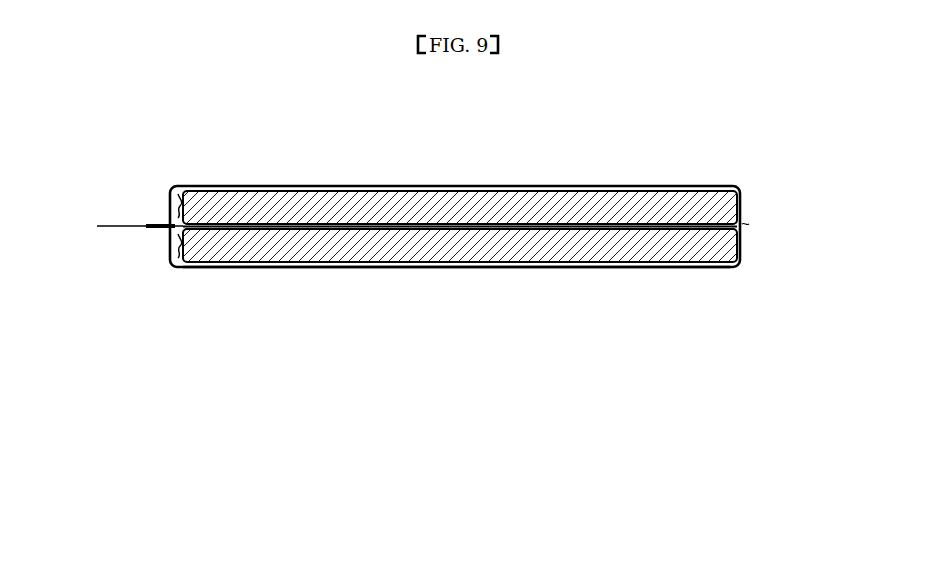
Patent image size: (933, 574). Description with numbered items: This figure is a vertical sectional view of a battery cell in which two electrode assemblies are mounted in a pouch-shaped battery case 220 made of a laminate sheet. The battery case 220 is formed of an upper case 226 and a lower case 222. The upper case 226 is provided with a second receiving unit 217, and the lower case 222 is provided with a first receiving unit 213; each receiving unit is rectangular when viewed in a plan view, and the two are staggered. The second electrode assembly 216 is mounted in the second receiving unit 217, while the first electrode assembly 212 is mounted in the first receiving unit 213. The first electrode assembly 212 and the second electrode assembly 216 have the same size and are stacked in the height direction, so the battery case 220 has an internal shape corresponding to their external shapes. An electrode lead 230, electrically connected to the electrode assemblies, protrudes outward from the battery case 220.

The first electrode assembly 212 is at (680, 243).
The first receiving unit 213 is at (177, 253).
The second electrode assembly 216 is at (688, 186).
The second receiving unit 217 is at (175, 191).
The battery case 220 is at (866, 197).
The lower case 222 is at (743, 246).
The upper case 226 is at (743, 203).
The electrode lead 230 is at (122, 225).